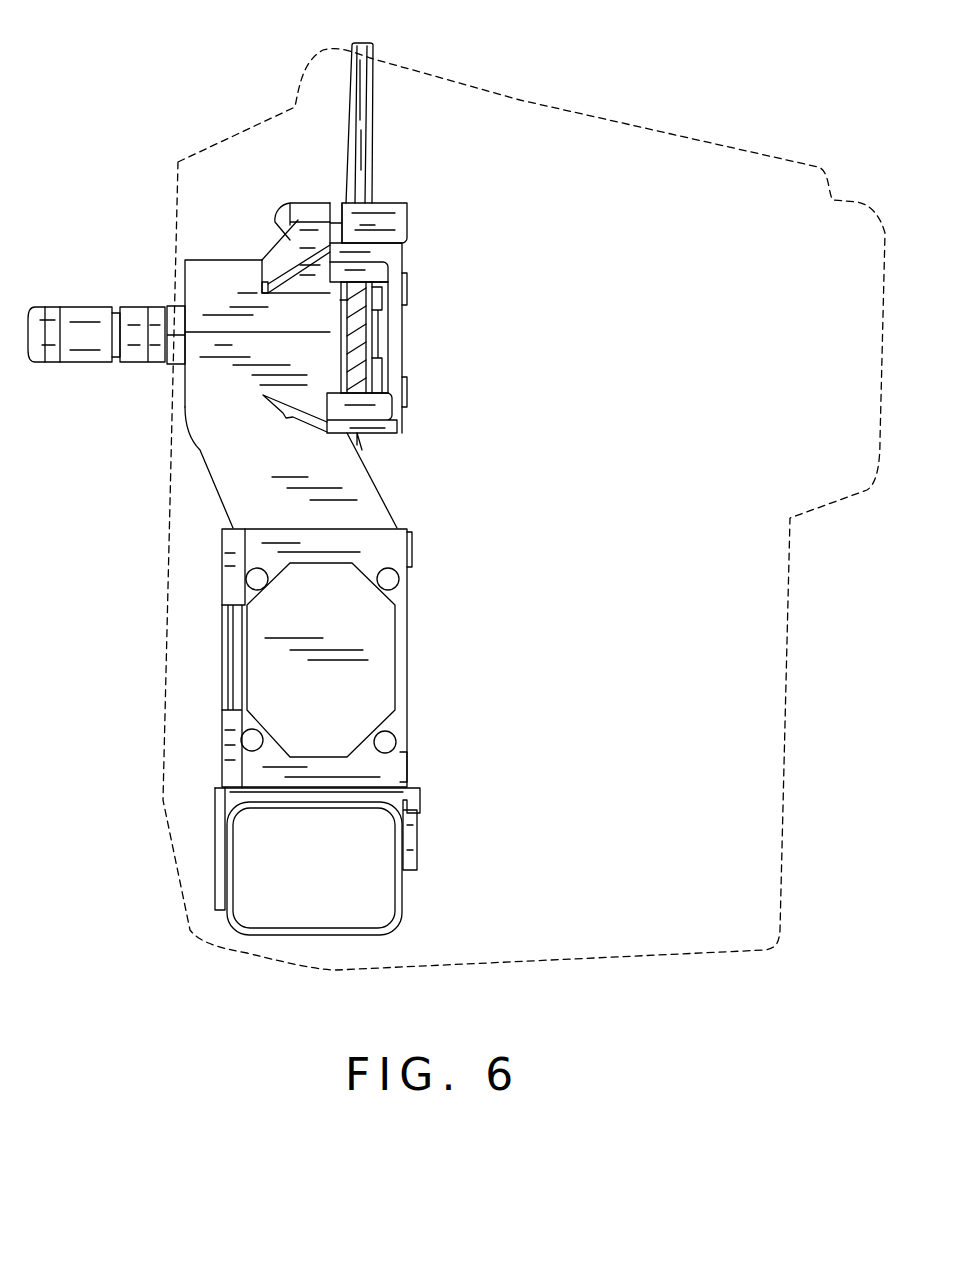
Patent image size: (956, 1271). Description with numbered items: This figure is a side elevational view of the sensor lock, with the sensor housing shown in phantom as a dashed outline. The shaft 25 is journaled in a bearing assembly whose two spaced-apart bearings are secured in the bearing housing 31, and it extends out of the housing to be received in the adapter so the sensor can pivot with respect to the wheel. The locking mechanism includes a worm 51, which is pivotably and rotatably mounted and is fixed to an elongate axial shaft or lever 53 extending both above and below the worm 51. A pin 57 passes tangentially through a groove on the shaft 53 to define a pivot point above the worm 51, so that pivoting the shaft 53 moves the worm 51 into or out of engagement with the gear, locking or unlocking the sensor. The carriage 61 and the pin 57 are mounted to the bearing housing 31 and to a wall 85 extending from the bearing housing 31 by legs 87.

The shaft 25 is at (98, 310).
The bearing housing 31 is at (202, 287).
The worm 51 is at (373, 338).
The shaft or lever 53 is at (363, 100).
The pin 57 is at (337, 197).
The carriage 61 is at (393, 203).
The wall 85 is at (240, 461).
The legs 87 is at (293, 247).